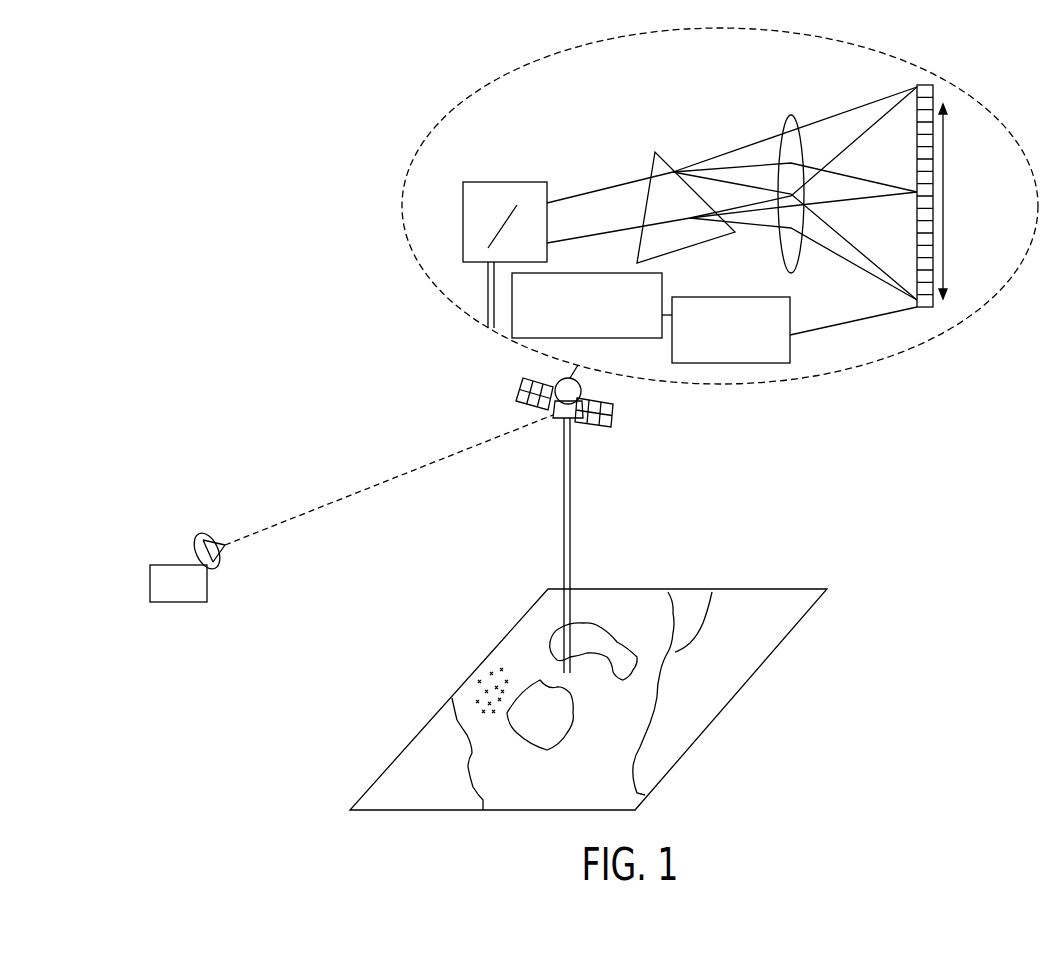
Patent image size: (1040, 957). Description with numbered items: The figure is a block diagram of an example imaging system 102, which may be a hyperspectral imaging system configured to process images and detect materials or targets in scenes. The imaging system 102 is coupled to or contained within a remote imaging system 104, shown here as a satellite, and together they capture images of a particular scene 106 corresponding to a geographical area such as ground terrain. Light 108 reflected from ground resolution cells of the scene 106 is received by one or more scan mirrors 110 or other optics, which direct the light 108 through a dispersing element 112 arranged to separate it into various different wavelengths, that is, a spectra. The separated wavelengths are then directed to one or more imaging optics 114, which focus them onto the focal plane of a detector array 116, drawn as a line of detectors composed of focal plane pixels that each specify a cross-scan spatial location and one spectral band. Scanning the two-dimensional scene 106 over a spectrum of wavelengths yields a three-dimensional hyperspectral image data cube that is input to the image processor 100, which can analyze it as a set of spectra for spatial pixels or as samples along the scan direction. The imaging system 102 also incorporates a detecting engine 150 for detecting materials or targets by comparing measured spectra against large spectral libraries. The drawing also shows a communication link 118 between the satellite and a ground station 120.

The image processor 100 is at (722, 363).
The imaging system 102 is at (875, 363).
The remote imaging system 104 is at (613, 424).
The scene 106 is at (452, 697).
The light 108 is at (488, 285).
The scan mirrors 110 is at (507, 182).
The dispersing element 112 is at (660, 152).
The imaging optics 114 is at (792, 118).
The detector array 116 is at (923, 84).
The communication link 118 is at (365, 486).
The ground station 120 is at (168, 565).
The detecting engine 150 is at (587, 305).